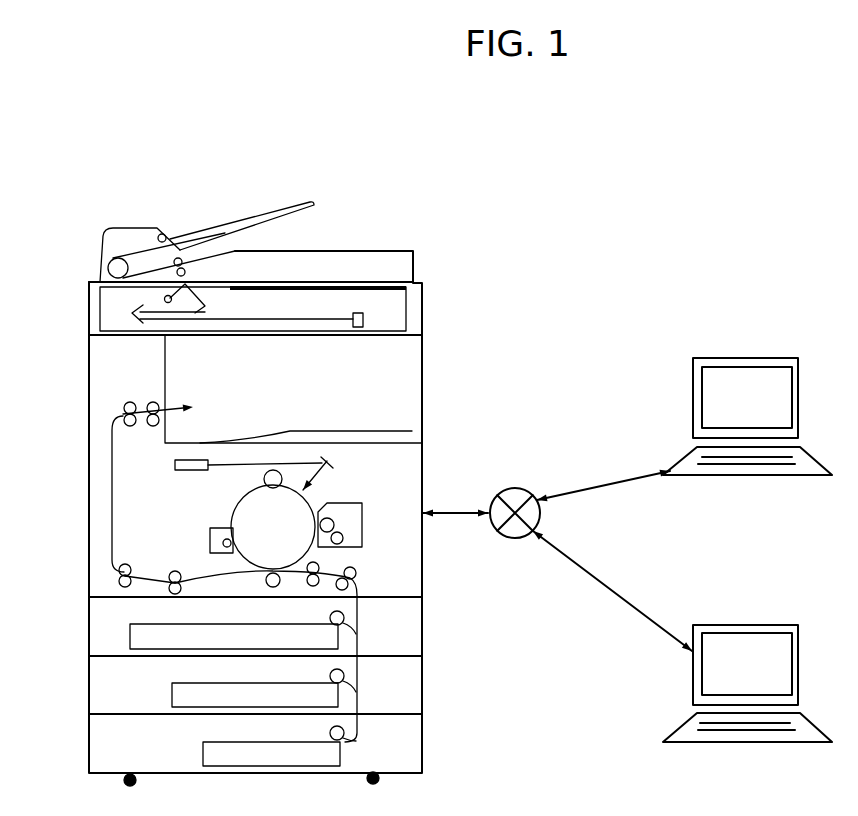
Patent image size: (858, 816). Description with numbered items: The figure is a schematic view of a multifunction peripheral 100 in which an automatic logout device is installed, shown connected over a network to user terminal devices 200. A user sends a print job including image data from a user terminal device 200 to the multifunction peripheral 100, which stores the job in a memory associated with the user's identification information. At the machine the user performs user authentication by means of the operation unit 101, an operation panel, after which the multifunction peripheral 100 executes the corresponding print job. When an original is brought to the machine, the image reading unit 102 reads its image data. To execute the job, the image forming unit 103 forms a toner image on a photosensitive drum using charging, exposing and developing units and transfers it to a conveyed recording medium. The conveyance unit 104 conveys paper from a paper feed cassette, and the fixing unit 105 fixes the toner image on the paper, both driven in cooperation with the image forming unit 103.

The multifunction peripheral 100 is at (254, 204).
The operation unit 101 is at (383, 285).
The image reading unit 102 is at (82, 332).
The image forming unit 103 is at (367, 587).
The conveyance unit 104 is at (365, 760).
The fixing unit 105 is at (165, 558).
The user terminal device 200 is at (772, 355).